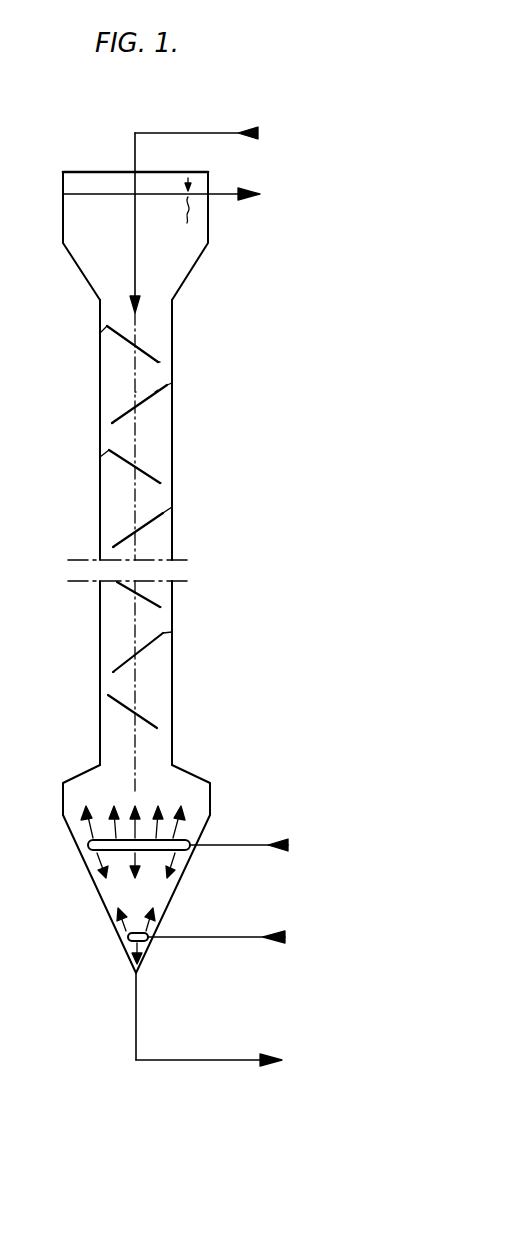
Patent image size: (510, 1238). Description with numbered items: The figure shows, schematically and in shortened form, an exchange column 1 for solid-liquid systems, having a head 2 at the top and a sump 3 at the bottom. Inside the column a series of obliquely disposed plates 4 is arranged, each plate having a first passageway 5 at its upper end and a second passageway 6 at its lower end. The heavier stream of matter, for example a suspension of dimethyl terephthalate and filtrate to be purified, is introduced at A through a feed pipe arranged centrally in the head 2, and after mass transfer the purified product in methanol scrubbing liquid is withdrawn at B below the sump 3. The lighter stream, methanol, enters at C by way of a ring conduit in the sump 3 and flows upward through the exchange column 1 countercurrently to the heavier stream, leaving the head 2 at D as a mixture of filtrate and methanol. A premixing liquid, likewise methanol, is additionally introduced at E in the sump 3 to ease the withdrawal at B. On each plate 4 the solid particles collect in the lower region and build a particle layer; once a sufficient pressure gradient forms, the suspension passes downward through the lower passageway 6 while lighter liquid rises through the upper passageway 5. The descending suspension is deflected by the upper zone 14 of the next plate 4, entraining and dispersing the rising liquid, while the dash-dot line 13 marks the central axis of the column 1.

The exchange column 1 is at (173, 441).
The head 2 is at (87, 237).
The sump 3 is at (105, 887).
The obliquely disposed plate 4 is at (149, 526).
The first passageway 5 is at (100, 334).
The second passageway 6 is at (168, 358).
The column axis 13 is at (135, 392).
The upper zone 14 is at (155, 392).
The heavier stream inlet A is at (204, 217).
The heavier stream outlet B is at (218, 1061).
The lighter stream inlet C is at (193, 842).
The lighter stream outlet D is at (170, 200).
The premixing liquid inlet E is at (210, 936).